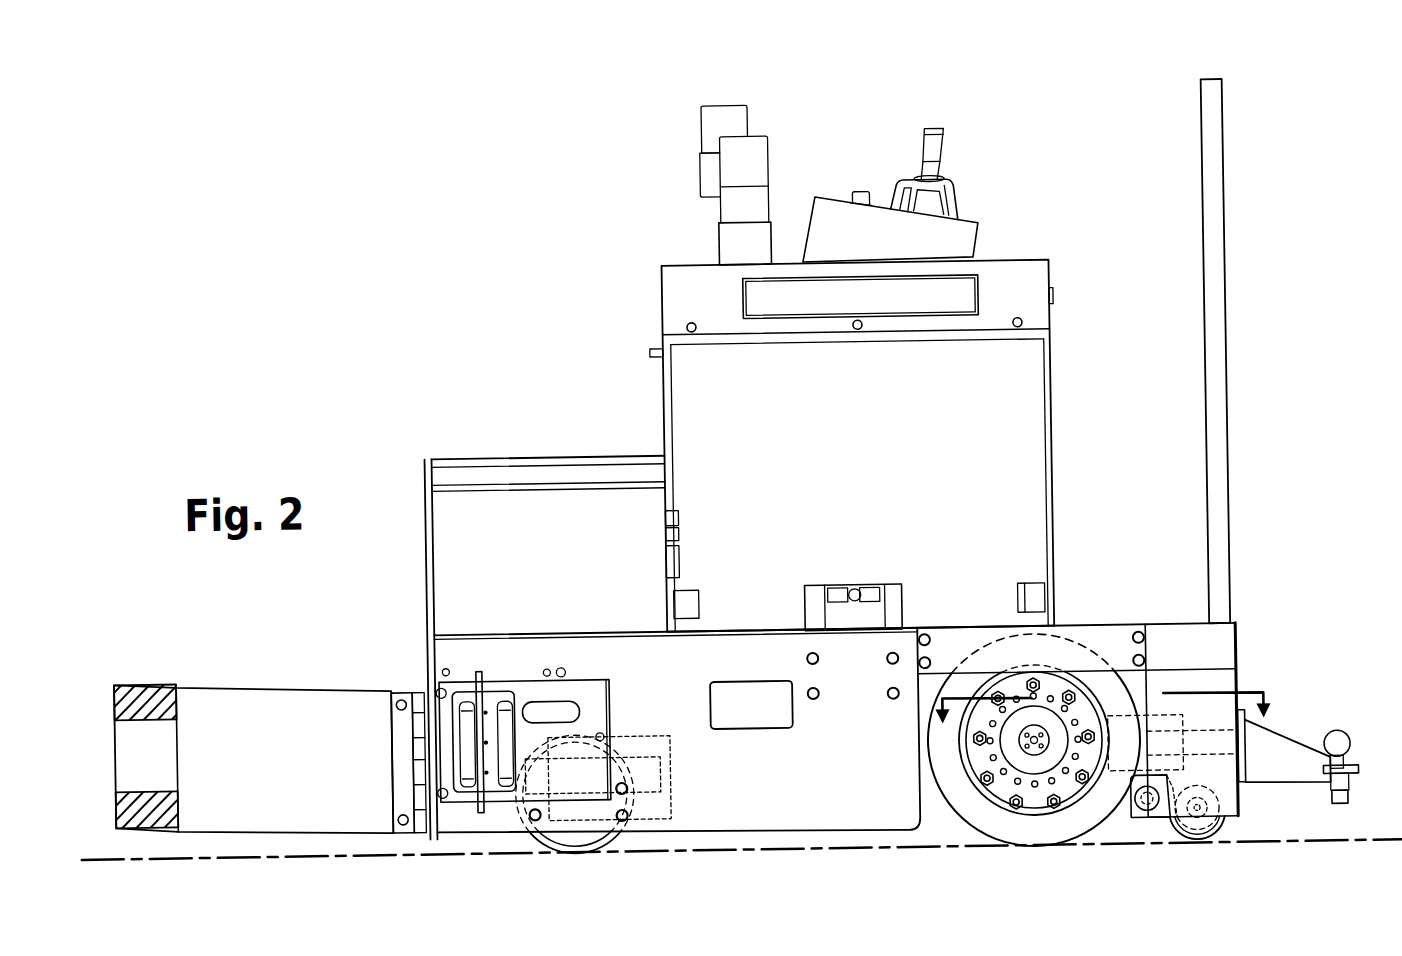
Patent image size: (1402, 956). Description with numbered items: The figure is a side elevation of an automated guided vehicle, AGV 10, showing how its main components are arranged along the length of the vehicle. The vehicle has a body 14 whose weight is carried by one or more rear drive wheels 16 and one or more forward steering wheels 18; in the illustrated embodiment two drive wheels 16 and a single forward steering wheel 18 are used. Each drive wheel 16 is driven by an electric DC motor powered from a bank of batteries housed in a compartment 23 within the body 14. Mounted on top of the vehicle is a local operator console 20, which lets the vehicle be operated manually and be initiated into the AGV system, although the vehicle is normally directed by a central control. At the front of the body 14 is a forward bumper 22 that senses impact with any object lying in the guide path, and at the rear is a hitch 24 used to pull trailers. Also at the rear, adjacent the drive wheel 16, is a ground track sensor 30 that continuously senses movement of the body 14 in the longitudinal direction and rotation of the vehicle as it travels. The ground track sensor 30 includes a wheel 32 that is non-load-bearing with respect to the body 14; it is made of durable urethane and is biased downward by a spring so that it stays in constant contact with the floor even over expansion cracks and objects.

The AGV 10 is at (1236, 138).
The body 14 is at (1239, 625).
The rear drive wheel 16 is at (980, 836).
The forward steering wheel 18 is at (611, 835).
The local operator console 20 is at (962, 196).
The forward bumper 22 is at (141, 671).
The compartment 23 is at (1058, 572).
The hitch 24 is at (1337, 743).
The ground track sensor 30 is at (1162, 826).
The wheel 32 is at (1232, 830).